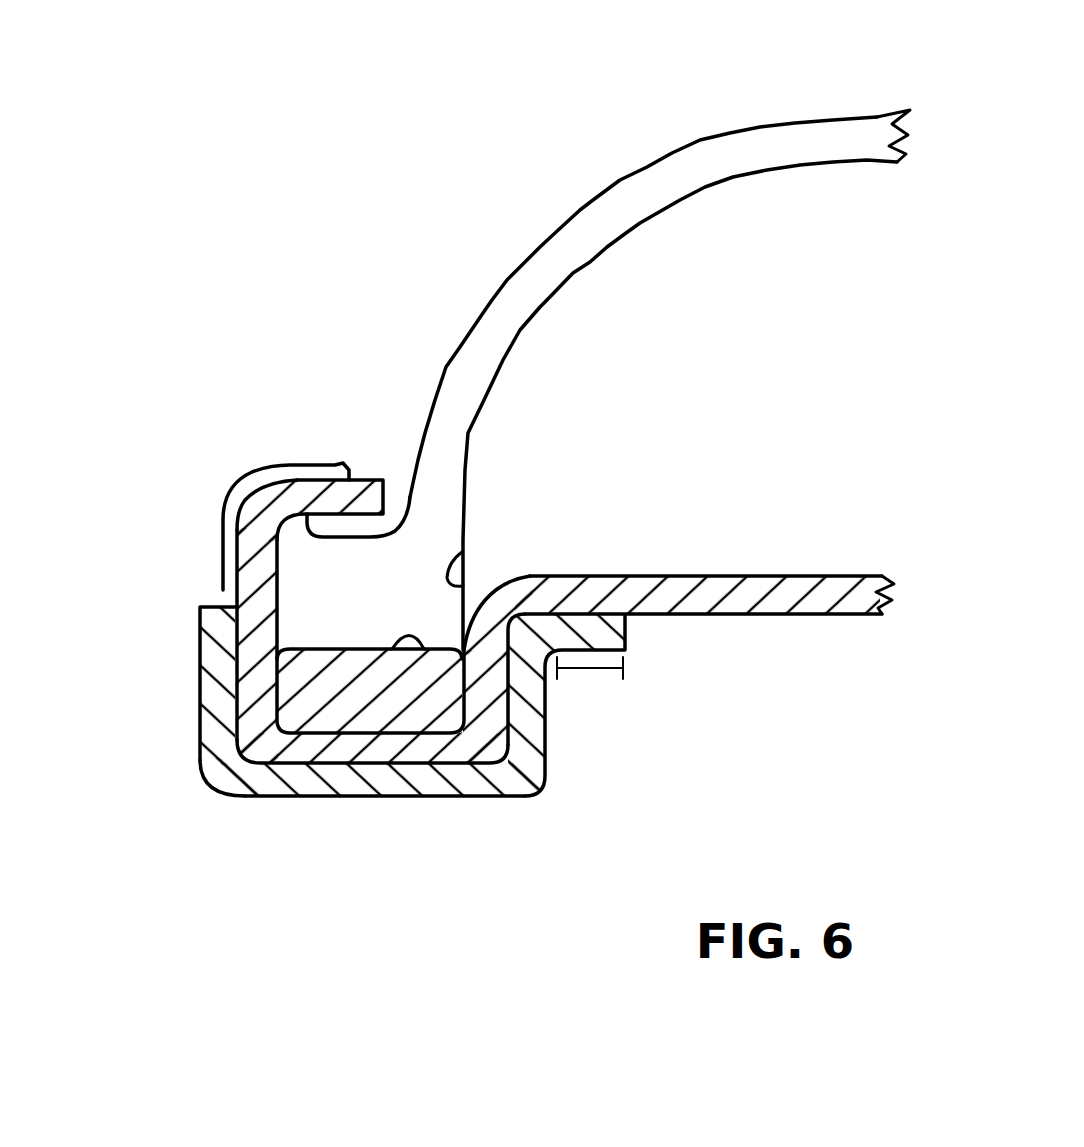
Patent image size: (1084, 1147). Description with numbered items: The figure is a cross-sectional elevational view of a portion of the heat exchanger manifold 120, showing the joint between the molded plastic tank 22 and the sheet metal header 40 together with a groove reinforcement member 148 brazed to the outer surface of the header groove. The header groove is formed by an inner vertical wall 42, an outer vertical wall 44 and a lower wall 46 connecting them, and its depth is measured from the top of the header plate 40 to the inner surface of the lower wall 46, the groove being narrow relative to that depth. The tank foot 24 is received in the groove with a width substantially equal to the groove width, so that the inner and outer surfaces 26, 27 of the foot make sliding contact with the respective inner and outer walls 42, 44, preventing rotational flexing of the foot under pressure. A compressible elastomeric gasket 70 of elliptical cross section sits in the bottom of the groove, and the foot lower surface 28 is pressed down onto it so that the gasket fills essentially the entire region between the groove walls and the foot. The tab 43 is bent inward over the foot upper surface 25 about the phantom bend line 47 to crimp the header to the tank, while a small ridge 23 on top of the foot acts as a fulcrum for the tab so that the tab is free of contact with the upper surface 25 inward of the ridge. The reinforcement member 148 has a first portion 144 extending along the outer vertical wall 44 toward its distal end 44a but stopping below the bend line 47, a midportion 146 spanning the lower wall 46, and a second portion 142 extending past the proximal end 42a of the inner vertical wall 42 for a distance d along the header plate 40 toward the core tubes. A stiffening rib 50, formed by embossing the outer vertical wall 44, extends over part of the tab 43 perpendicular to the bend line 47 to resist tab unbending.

The manifold 120 is at (345, 152).
The tank 22 is at (776, 140).
The ridge 23 is at (292, 528).
The tank foot 24 is at (382, 598).
The foot upper surface 25 is at (378, 527).
The inner surface of the tank foot 26 is at (450, 580).
The outer surface of the tank foot 27 is at (290, 594).
The tank foot lower surface 28 is at (423, 650).
The header 40 is at (742, 580).
The inner vertical wall 42 is at (493, 700).
The proximal end of the inner vertical wall 42a is at (493, 578).
The tab 43 is at (320, 492).
The outer vertical wall 44 is at (253, 656).
The distal end of the outer vertical wall 44a is at (386, 506).
The lower wall 46 is at (393, 748).
The phantom bend line 47 is at (255, 497).
The stiffening rib 50 is at (222, 536).
The compressible gasket 70 is at (333, 713).
The second portion of the reinforcement member 142 is at (543, 743).
The first portion of the reinforcement member 144 is at (213, 713).
The midportion of the reinforcement member 146 is at (350, 785).
The reinforcement member 148 is at (203, 783).